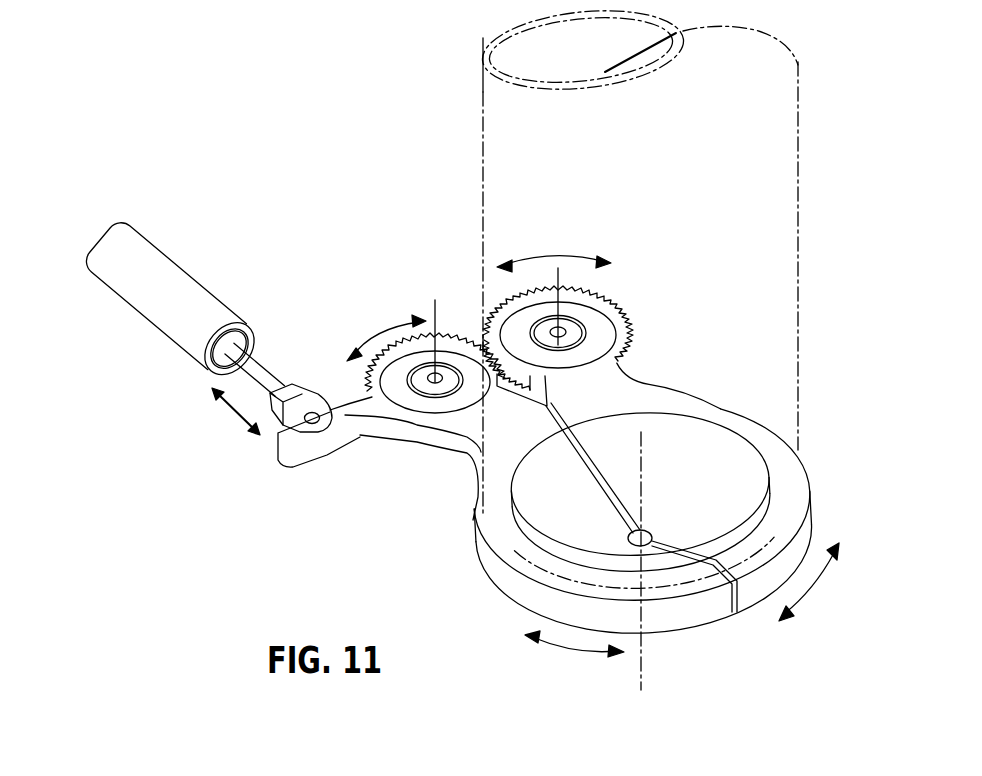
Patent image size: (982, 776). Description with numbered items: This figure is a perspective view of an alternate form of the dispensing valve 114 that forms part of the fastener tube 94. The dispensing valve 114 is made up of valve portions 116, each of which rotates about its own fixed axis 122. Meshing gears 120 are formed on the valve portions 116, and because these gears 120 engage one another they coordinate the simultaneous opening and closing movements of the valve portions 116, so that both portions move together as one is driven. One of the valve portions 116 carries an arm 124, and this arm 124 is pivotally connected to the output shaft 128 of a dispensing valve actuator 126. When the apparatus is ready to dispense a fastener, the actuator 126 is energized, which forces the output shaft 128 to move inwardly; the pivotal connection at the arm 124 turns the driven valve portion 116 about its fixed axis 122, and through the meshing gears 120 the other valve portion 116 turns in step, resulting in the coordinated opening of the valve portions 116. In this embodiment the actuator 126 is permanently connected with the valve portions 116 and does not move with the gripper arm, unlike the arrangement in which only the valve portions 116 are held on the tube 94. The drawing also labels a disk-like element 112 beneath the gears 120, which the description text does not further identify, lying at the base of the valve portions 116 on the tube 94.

The tube 94 is at (769, 164).
The rotatable plate/disk 112 is at (645, 477).
The dispensing valve 114 is at (272, 487).
The valve portions 116 is at (755, 588).
The meshing gears 120 is at (496, 301).
The fixed axis 122 is at (565, 274).
The arm 124 is at (367, 430).
The dispensing valve actuator 126 is at (127, 277).
The output shaft 128 is at (268, 375).